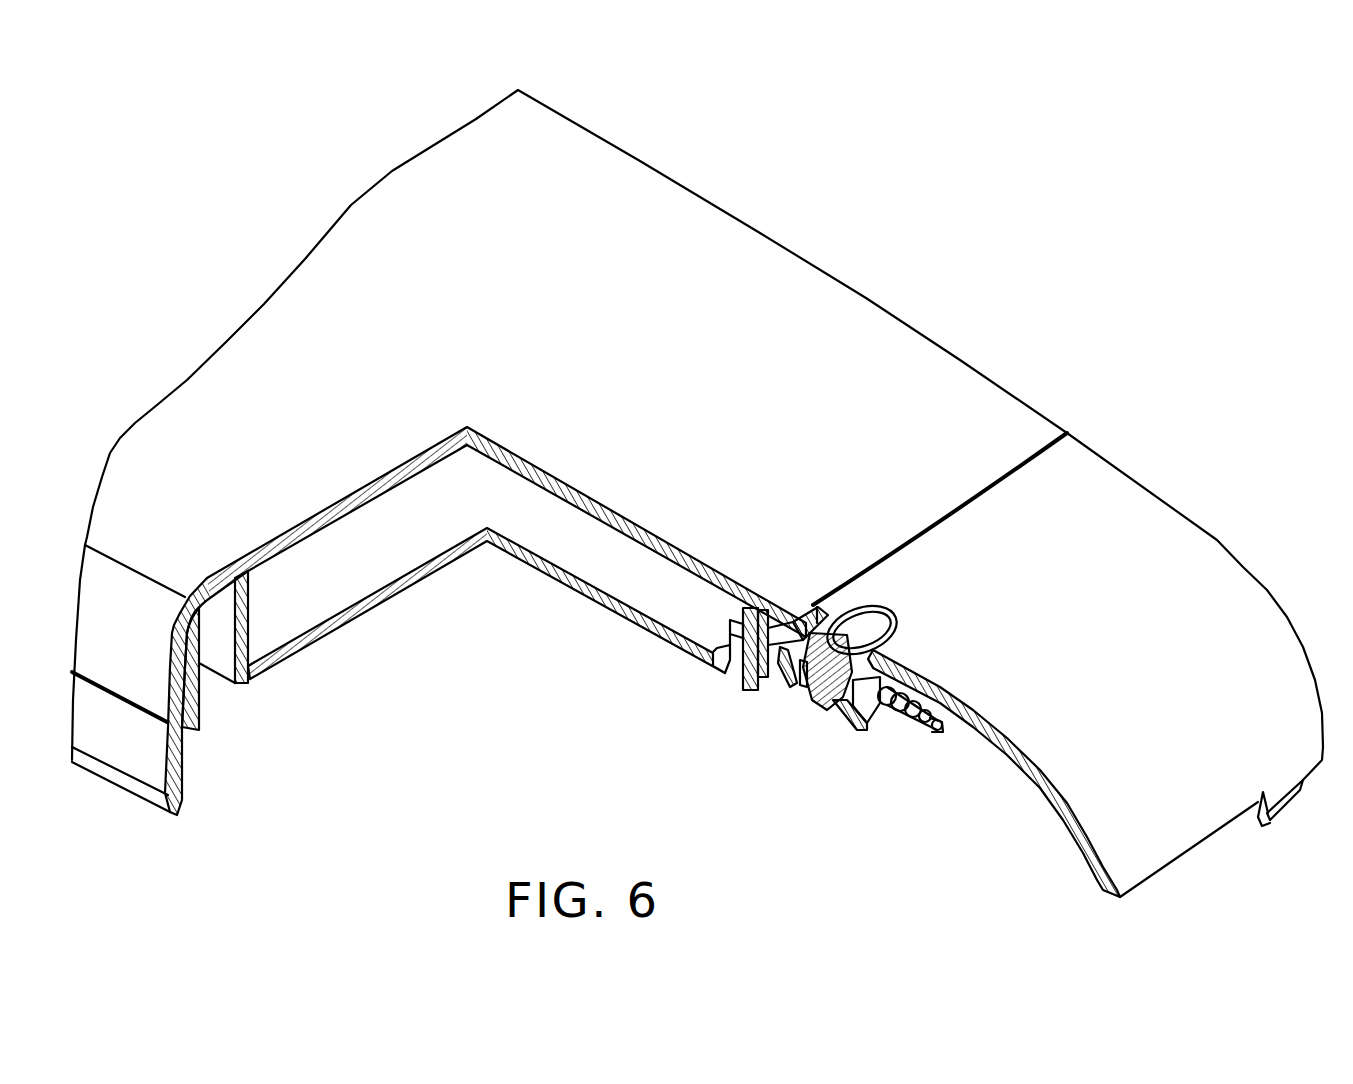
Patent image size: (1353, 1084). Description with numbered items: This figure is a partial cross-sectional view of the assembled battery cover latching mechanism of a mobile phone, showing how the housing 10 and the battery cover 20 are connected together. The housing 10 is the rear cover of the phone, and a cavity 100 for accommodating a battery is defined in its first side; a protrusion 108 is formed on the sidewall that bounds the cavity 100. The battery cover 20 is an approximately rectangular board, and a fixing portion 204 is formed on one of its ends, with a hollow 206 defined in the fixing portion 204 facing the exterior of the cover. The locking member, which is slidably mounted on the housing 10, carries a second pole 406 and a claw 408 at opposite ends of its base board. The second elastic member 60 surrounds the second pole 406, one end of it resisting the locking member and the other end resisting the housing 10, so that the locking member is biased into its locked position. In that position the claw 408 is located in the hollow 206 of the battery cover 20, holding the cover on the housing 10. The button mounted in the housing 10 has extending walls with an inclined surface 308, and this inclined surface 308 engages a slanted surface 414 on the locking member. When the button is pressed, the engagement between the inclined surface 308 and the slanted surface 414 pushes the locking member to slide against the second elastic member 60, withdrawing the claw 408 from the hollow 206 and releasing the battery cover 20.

The housing 10 is at (1210, 590).
The battery cover 20 is at (815, 329).
The second elastic member 60 is at (900, 727).
The cavity 100 is at (298, 597).
The protrusion 108 is at (710, 658).
The fixing portion 204 is at (778, 637).
The hollow 206 is at (740, 675).
The inclined surface 308 is at (877, 703).
The second pole 406 is at (920, 730).
The claw 408 is at (790, 677).
The slanted surface 414 is at (837, 713).